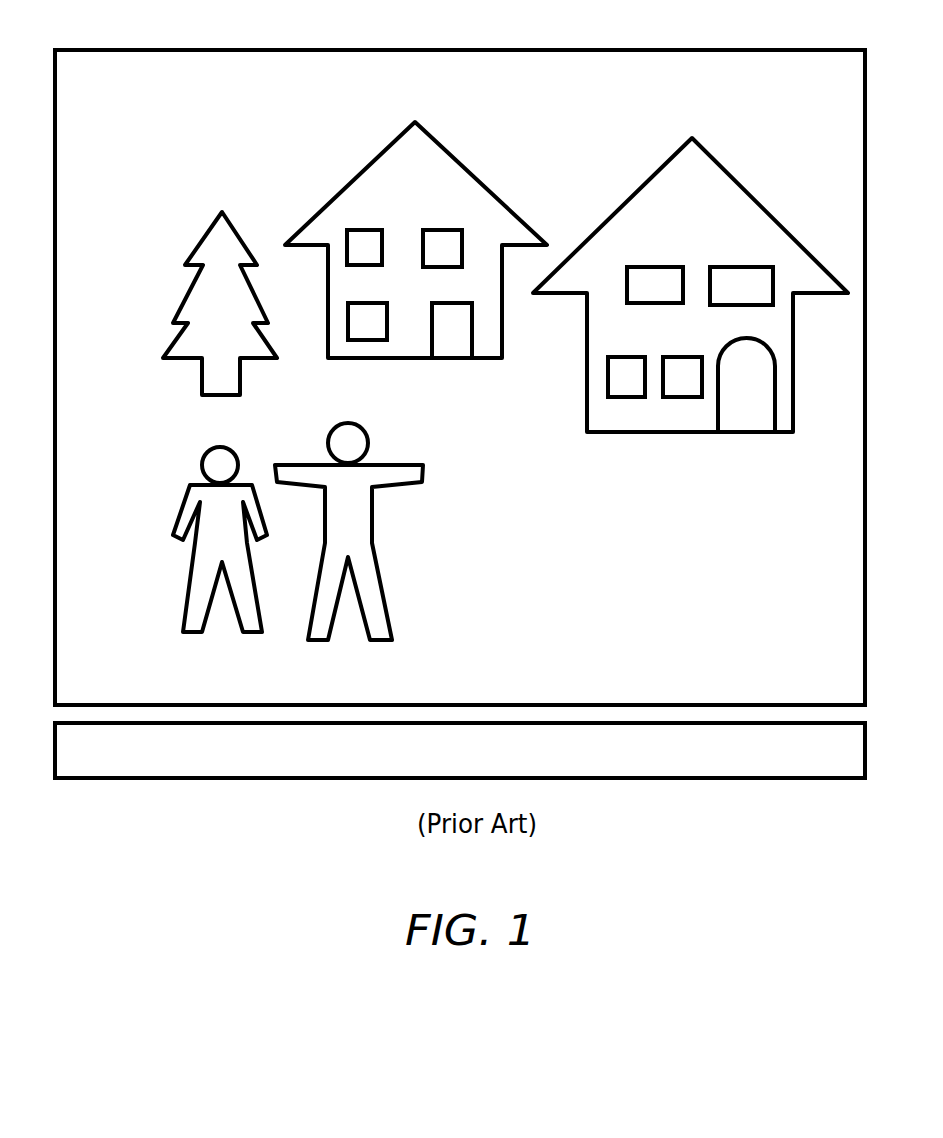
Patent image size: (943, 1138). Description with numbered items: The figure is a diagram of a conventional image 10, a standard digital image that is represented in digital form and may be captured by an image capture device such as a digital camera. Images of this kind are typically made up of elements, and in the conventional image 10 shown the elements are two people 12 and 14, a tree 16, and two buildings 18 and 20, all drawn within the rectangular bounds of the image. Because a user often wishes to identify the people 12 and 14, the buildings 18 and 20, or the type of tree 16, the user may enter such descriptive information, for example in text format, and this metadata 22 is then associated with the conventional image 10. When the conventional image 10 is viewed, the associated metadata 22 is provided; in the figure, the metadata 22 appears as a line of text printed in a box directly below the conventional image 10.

The conventional image 10 is at (90, 50).
The person 12 is at (175, 478).
The person 14 is at (386, 551).
The tree 16 is at (197, 252).
The building 18 is at (362, 168).
The building 20 is at (648, 178).
The metadata 22 is at (52, 760).